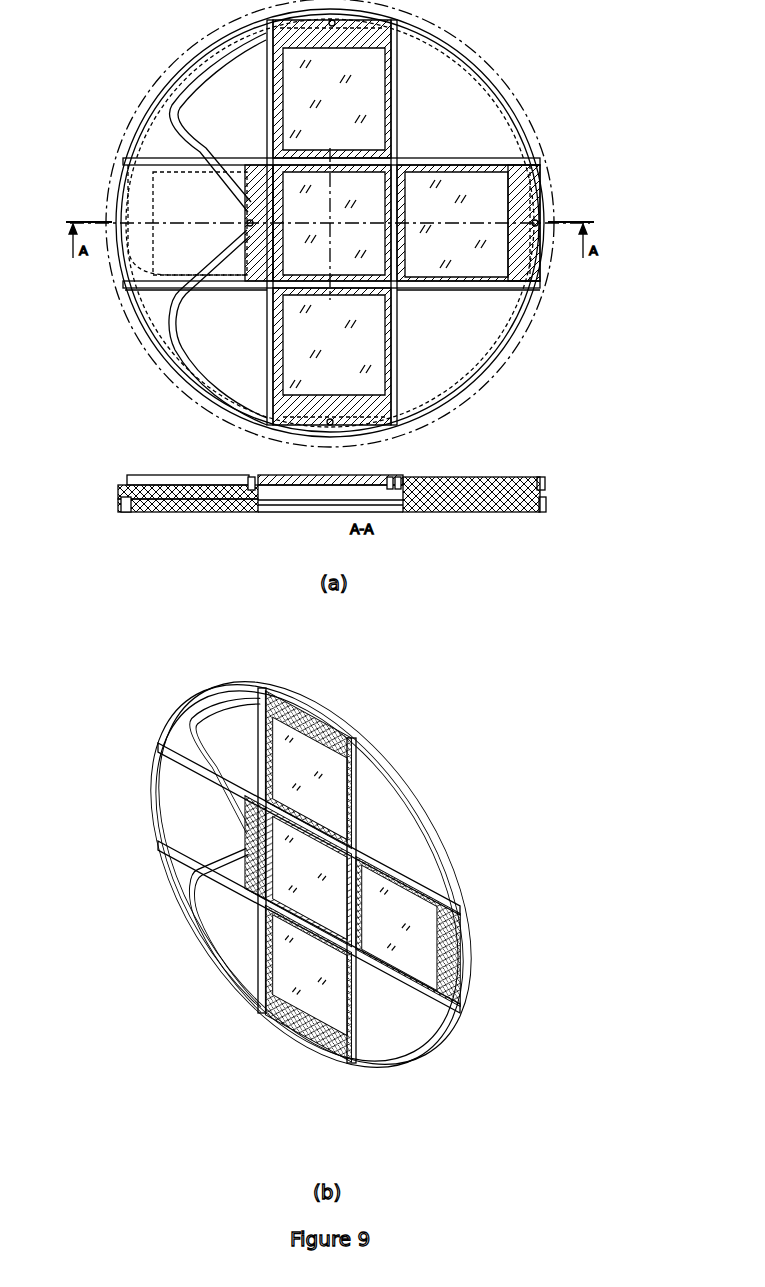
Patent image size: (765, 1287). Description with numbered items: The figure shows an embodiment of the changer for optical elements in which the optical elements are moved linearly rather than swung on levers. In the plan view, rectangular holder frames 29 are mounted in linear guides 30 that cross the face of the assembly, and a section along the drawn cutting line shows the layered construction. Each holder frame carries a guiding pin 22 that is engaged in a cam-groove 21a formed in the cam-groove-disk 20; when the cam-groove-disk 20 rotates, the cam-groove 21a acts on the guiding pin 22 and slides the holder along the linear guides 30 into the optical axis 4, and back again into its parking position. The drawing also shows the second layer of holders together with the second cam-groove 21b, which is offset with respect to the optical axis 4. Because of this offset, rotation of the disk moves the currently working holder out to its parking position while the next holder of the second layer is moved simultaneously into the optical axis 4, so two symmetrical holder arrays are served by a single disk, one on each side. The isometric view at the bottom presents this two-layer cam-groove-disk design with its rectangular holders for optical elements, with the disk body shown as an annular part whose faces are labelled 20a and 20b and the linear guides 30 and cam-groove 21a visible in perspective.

The optical axis 4 is at (320, 236).
The cam-groove-disk 20 is at (457, 343).
The ring inner surface 20a is at (393, 833).
The ring outer rim 20b is at (447, 850).
The cam-groove 21a is at (192, 369).
The second cam-groove 21b is at (145, 137).
The guiding pin 22 is at (540, 220).
The rectangular holder frame 29 is at (453, 207).
The linear guide 30 is at (265, 157).